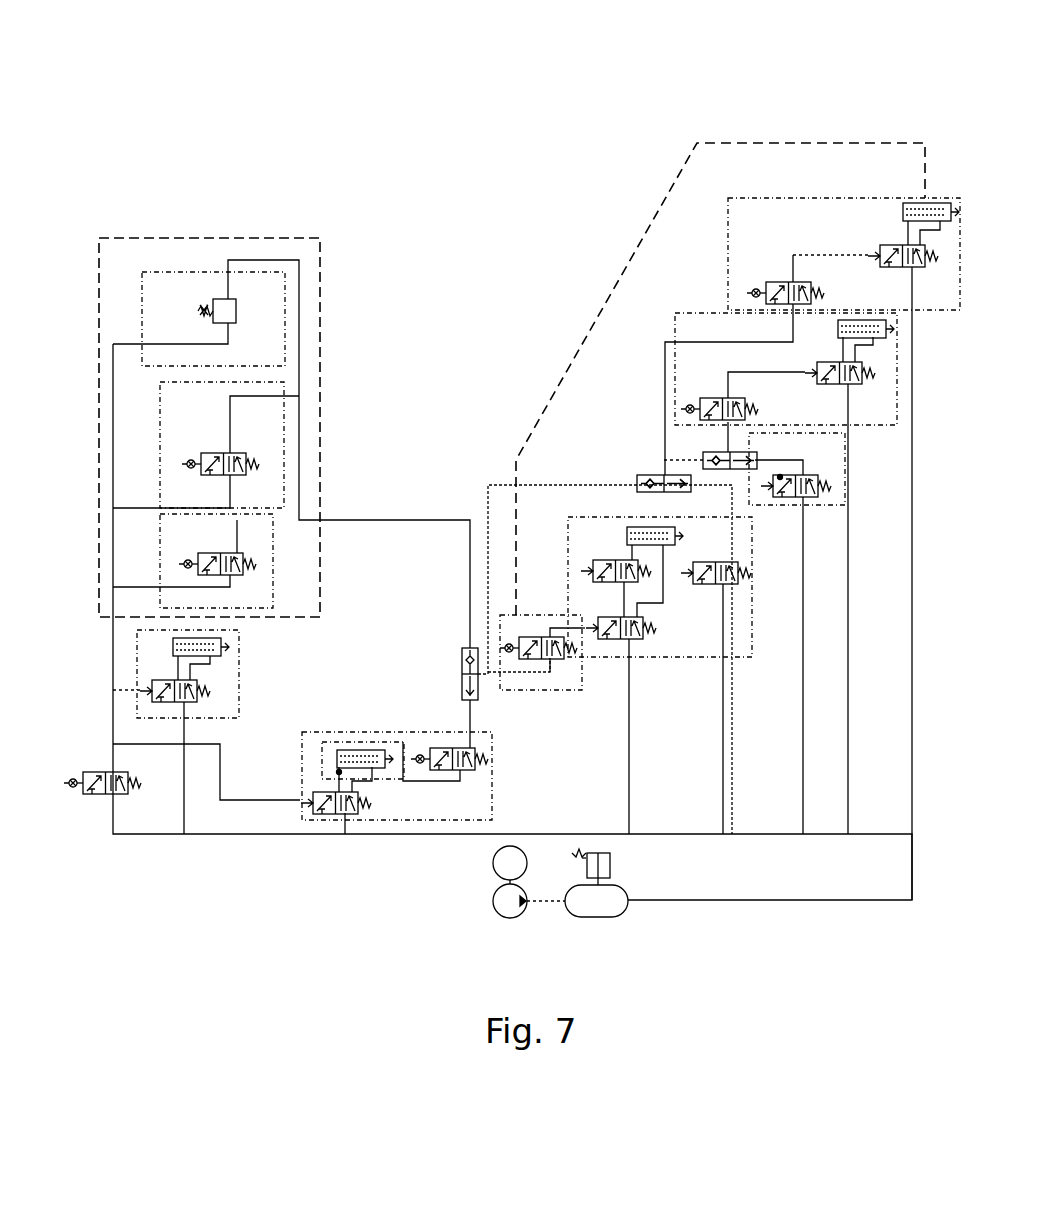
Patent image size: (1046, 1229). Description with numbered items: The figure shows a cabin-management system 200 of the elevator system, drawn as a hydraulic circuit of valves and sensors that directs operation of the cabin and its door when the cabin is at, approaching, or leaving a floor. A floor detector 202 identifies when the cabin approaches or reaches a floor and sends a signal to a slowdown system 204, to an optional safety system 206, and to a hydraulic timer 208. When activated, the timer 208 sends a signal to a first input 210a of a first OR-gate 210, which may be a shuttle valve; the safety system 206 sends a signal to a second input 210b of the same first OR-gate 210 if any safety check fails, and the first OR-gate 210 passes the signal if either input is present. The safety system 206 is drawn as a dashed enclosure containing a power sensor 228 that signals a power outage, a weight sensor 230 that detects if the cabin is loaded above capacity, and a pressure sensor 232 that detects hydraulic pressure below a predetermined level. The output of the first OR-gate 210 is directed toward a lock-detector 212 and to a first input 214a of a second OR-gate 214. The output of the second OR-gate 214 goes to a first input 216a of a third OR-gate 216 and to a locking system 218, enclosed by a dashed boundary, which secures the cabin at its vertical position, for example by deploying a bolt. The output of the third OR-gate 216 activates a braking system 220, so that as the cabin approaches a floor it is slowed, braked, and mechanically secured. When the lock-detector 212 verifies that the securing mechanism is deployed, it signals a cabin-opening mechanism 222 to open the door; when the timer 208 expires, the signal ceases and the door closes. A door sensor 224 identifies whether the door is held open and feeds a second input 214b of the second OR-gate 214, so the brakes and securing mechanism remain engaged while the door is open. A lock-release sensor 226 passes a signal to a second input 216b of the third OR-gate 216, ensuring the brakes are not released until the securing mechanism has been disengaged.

The cabin-management system 200 is at (358, 104).
The floor detector 202 is at (98, 795).
The slowdown system 204 is at (239, 678).
The safety system 206 is at (284, 443).
The hydraulic timer 208 is at (355, 732).
The first OR-gate 210 is at (463, 677).
The first input of the first OR-gate 210a is at (470, 700).
The second input of the first OR-gate 210b is at (462, 650).
The lock-detector 212 is at (563, 690).
The second OR-gate 214 is at (642, 486).
The first input of the second OR-gate 214a is at (641, 476).
The second input of the second OR-gate 214b is at (686, 484).
The third OR-gate 216 is at (713, 438).
The first input of the third OR-gate 216a is at (712, 458).
The second input of the third OR-gate 216b is at (755, 458).
The locking system 218 is at (745, 198).
The braking system 220 is at (888, 430).
The cabin-opening mechanism 222 is at (638, 640).
The door sensor 224 is at (716, 584).
The lock-release sensor 226 is at (812, 497).
The power sensor 228 is at (241, 553).
The weight sensor 230 is at (244, 455).
The pressure sensor 232 is at (236, 305).